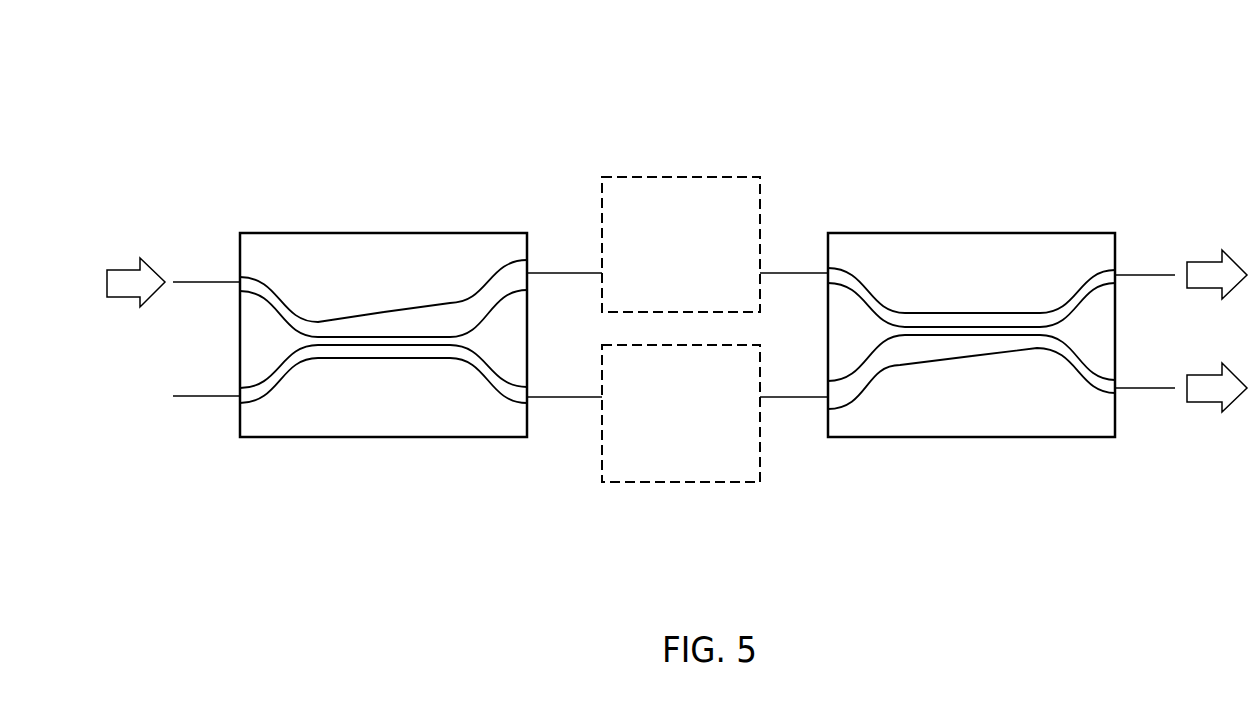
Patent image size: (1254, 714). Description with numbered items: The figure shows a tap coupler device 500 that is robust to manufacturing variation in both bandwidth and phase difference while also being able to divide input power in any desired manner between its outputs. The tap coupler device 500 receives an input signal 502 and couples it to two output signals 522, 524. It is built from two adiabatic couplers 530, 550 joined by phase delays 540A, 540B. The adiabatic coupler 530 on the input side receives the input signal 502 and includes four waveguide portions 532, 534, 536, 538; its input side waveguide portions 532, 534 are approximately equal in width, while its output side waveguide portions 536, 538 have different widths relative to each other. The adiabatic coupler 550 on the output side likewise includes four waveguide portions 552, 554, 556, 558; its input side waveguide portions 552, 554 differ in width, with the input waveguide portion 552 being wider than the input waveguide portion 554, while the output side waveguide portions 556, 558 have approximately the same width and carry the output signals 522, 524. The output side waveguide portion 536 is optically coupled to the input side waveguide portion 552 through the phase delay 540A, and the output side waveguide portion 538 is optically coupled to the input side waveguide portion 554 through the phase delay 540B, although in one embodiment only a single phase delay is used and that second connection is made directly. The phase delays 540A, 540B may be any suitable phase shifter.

The tap coupler device 500 is at (173, 63).
The input signal 502 is at (124, 269).
The output signal 522 is at (1203, 262).
The output signal 524 is at (1203, 402).
The adiabatic coupler 530 is at (378, 233).
The input side waveguide portion 532 is at (302, 298).
The input side waveguide portion 534 is at (305, 378).
The output side waveguide portion 536 is at (453, 290).
The output side waveguide portion 538 is at (452, 378).
The phase delay 540A is at (710, 288).
The phase delay 540B is at (710, 456).
The adiabatic coupler 550 is at (975, 233).
The input side waveguide portion 552 is at (896, 290).
The input side waveguide portion 554 is at (898, 384).
The output side waveguide portion 556 is at (1041, 292).
The output side waveguide portion 558 is at (1041, 367).